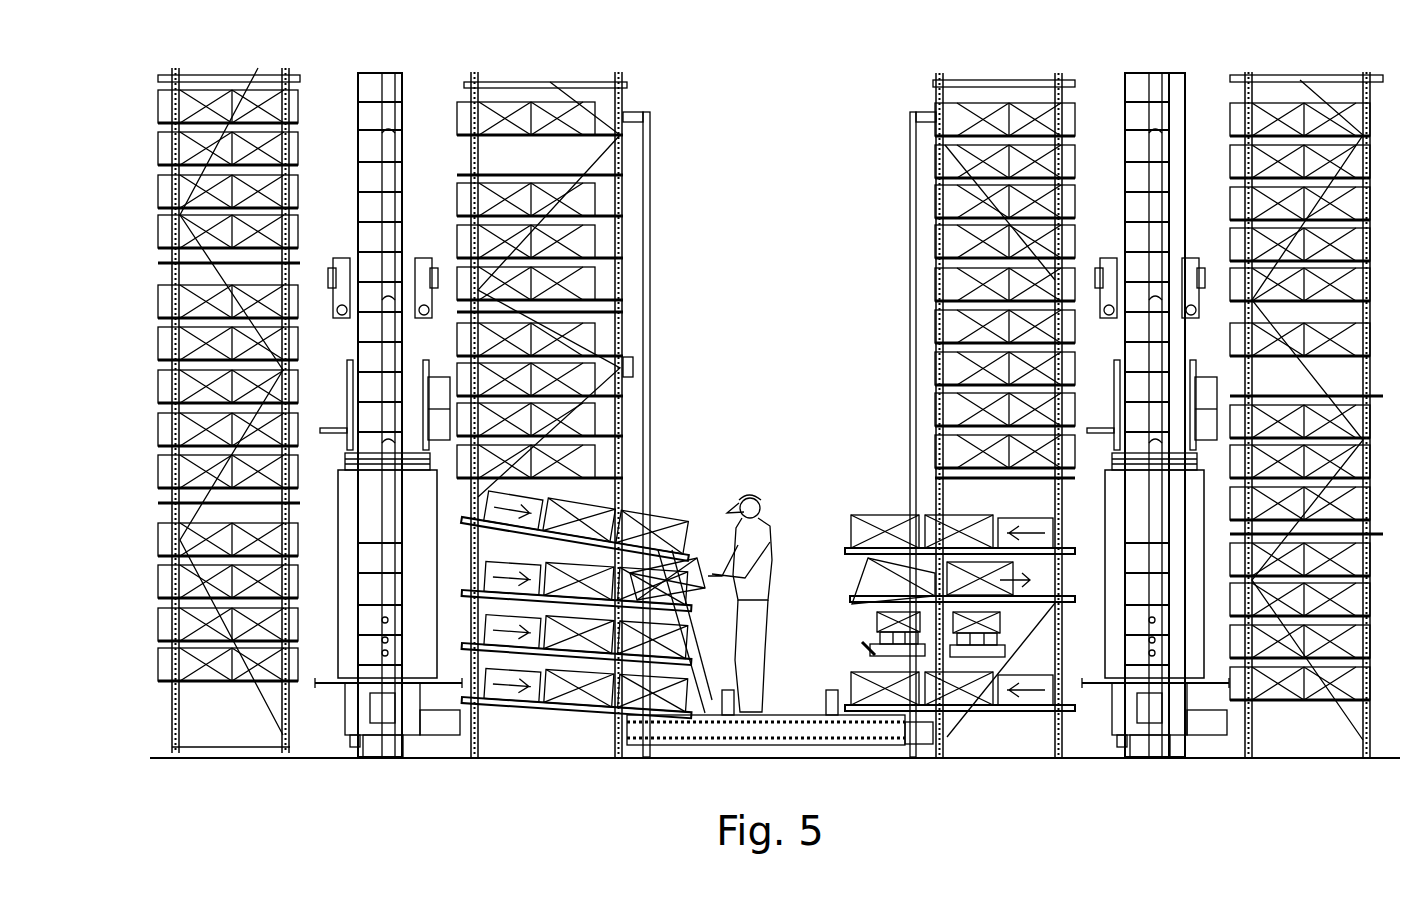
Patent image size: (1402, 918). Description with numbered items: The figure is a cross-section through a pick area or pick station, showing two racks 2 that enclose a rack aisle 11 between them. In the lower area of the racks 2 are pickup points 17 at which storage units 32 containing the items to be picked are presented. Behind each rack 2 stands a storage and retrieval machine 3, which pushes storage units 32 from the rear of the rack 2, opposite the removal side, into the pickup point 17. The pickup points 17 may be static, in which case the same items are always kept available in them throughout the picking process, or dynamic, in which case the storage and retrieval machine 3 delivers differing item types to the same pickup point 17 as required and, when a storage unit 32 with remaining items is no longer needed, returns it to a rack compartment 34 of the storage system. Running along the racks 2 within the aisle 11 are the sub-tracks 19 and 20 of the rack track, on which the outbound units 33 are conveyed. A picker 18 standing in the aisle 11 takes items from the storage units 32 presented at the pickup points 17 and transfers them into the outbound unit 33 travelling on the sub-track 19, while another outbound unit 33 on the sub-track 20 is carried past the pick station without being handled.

The rack 2 is at (935, 95).
The storage and retrieval machine 3 is at (405, 128).
The rack aisle 11 is at (780, 530).
The pickup point 17 is at (483, 548).
The picker 18 is at (750, 492).
The sub-track 19 is at (880, 657).
The sub-track 20 is at (977, 652).
The storage unit 32 is at (490, 108).
The outbound unit 33 is at (875, 622).
The rack compartment 34 is at (222, 690).